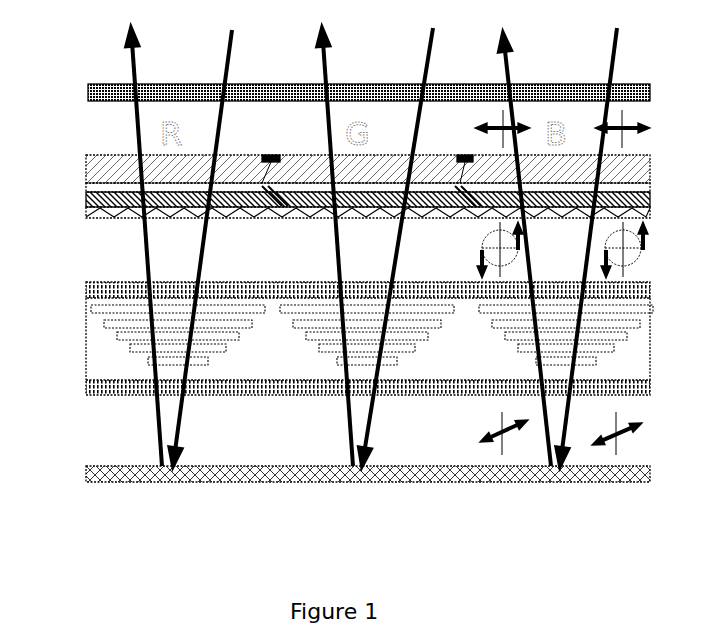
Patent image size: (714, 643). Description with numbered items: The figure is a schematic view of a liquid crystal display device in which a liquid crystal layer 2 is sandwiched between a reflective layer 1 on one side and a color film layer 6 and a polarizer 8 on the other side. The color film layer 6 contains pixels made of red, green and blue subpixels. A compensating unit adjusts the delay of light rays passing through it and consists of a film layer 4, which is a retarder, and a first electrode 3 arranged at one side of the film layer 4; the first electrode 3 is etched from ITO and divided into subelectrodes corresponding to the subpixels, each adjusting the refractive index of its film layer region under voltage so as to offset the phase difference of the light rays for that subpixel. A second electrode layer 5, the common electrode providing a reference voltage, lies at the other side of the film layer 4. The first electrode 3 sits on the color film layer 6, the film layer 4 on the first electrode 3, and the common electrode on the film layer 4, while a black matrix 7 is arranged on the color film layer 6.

The reflective layer 1 is at (105, 468).
The liquid crystal layer 2 is at (100, 343).
The first electrode 3 is at (86, 218).
The film layer 4 is at (86, 202).
The second electrode layer 5 is at (86, 188).
The color film layer 6 is at (100, 165).
The black matrix 7 is at (270, 162).
The polarizer 8 is at (100, 84).